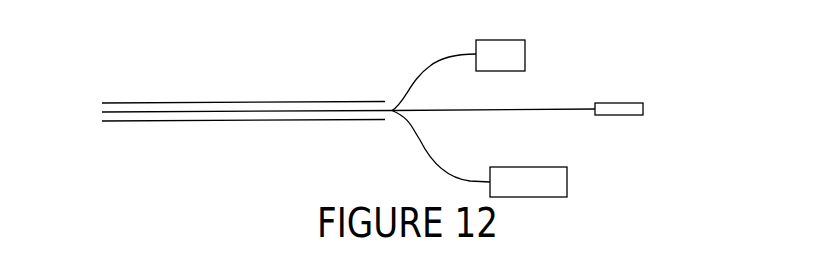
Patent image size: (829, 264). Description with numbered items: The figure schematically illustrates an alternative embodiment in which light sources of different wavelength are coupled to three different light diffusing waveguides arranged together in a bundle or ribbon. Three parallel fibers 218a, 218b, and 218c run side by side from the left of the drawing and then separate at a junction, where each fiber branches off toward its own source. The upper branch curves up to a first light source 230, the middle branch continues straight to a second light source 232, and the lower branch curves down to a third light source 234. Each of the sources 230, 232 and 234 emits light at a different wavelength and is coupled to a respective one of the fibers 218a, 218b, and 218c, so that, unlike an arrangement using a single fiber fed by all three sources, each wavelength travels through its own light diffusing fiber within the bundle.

The fiber 218a is at (178, 102).
The fiber 218b is at (230, 111).
The fiber 218c is at (283, 120).
The light source 230 is at (498, 40).
The light source 232 is at (615, 103).
The light source 234 is at (539, 167).